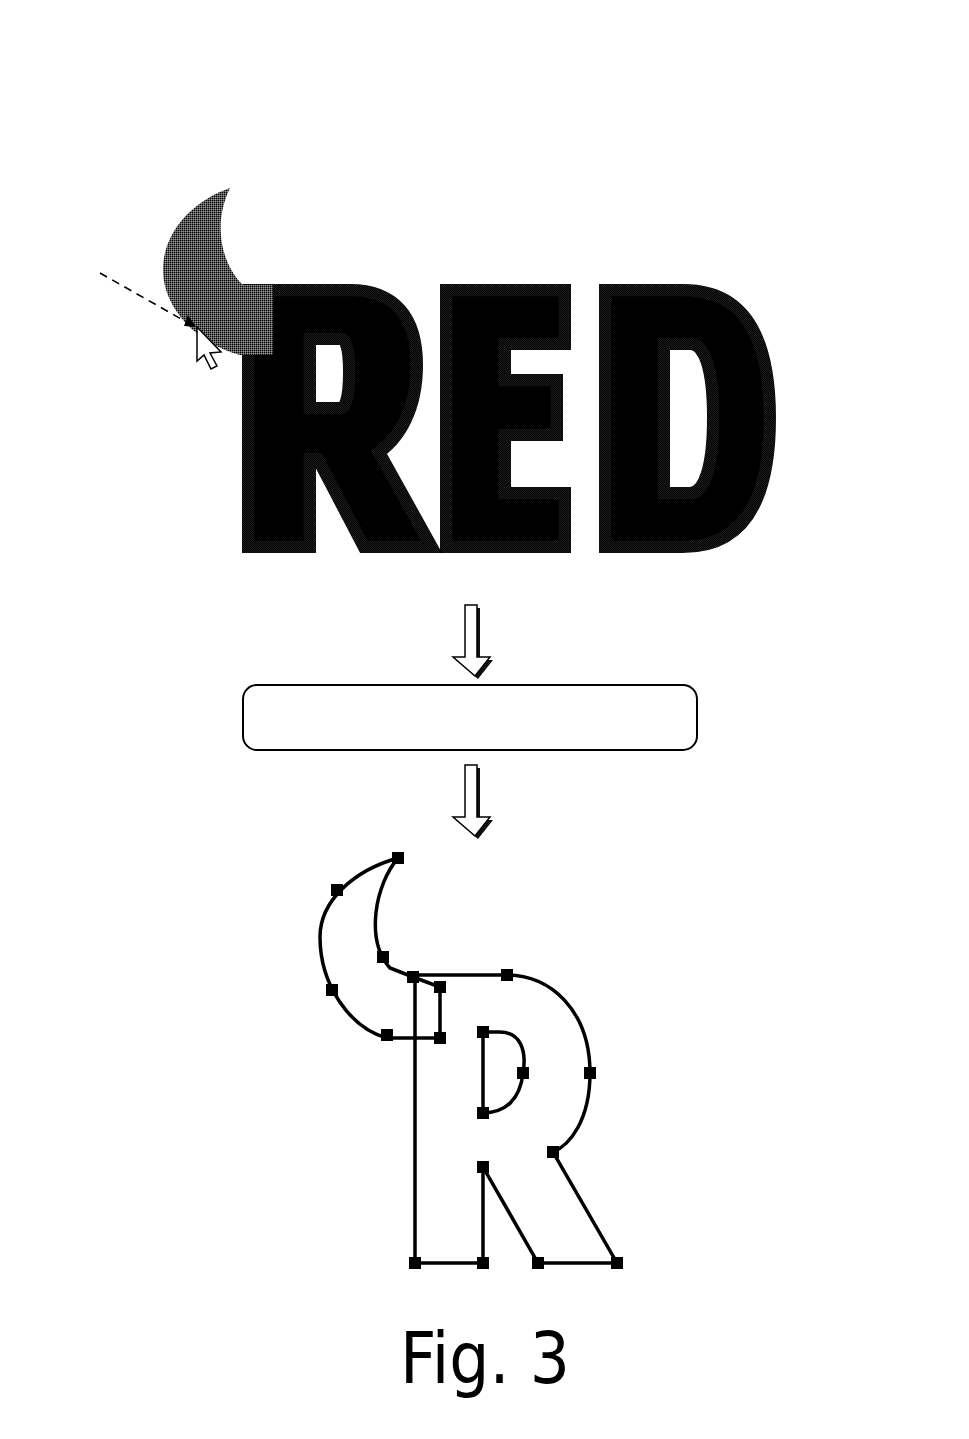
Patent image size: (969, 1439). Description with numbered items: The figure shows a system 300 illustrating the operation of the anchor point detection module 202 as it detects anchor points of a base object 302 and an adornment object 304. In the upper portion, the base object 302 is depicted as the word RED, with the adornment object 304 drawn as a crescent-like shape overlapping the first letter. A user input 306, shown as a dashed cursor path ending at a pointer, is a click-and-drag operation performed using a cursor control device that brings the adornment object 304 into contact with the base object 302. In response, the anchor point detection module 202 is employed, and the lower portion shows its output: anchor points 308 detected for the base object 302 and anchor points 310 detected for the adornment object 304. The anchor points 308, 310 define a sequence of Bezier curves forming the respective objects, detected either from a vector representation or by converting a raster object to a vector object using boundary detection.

The system 300 is at (205, 78).
The base object 302 is at (320, 283).
The adornment object 304 is at (206, 210).
The user input 306 is at (158, 306).
The anchor points of the base object 308 is at (538, 949).
The anchor points of the adornment object 310 is at (308, 858).
The anchor point detection module 202 is at (472, 719).